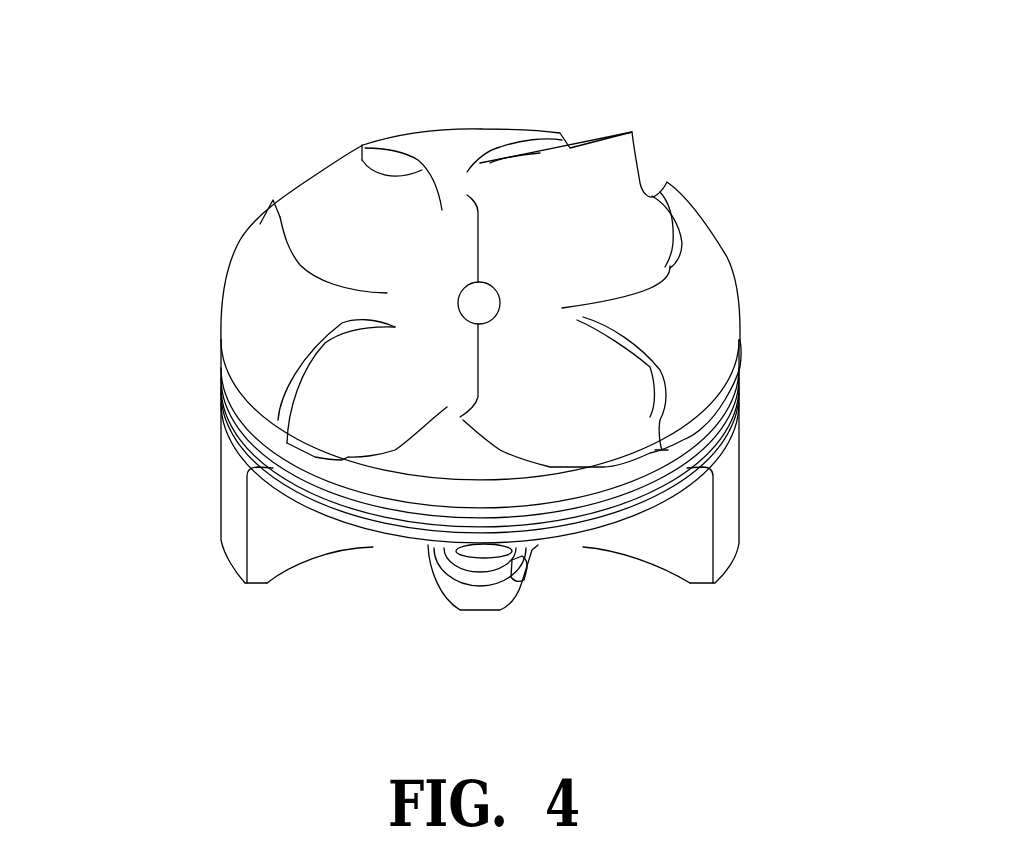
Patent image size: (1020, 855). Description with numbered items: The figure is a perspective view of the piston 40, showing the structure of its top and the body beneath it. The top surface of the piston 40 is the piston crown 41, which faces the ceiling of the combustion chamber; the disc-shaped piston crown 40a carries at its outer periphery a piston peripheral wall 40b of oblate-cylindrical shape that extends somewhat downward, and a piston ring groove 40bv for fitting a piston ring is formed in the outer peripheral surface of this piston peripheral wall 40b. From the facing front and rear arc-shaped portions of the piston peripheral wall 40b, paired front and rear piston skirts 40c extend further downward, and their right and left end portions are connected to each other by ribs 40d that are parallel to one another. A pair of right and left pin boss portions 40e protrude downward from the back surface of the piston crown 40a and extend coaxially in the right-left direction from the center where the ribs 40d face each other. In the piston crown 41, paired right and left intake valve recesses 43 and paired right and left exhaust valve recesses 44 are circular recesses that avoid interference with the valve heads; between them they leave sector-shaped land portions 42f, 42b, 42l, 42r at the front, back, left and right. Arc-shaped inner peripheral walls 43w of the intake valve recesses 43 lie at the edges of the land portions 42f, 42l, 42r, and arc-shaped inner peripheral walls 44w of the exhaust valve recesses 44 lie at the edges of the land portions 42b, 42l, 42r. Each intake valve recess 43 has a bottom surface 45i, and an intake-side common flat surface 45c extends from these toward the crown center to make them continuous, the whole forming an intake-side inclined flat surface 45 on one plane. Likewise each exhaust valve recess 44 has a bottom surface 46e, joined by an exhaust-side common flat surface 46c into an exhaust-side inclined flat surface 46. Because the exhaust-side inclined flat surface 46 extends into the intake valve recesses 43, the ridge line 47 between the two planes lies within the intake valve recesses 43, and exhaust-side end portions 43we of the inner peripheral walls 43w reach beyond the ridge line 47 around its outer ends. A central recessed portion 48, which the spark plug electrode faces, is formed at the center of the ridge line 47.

The piston 40 is at (405, 112).
The piston crown 40a is at (233, 407).
The piston peripheral wall 40b is at (247, 423).
The piston ring groove 40bv is at (712, 425).
The piston skirt 40c is at (228, 512).
The rib 40d is at (593, 547).
The pin boss portion 40e is at (512, 597).
The piston crown 41 is at (460, 220).
The land portion 42r is at (478, 140).
The land portion 42b is at (702, 327).
The land portion 42f is at (243, 340).
The land portion 42l is at (453, 470).
The intake valve recess 43 is at (568, 236).
The inner peripheral wall of intake valve recess 43w is at (632, 133).
The exhaust-side end portion 43we is at (468, 196).
The exhaust valve recess 44 is at (386, 226).
The inner peripheral wall of exhaust valve recess 44w is at (345, 165).
The intake-side inclined flat surface 45 is at (835, 150).
The intake valve recess bottom surface 45i is at (680, 215).
The intake-side common flat surface 45c is at (562, 308).
The exhaust-side inclined flat surface 46 is at (110, 180).
The exhaust valve recess bottom surface 46e is at (325, 230).
The exhaust-side common flat surface 46c is at (420, 292).
The ridge line 47 is at (476, 252).
The central recessed portion 48 is at (486, 300).